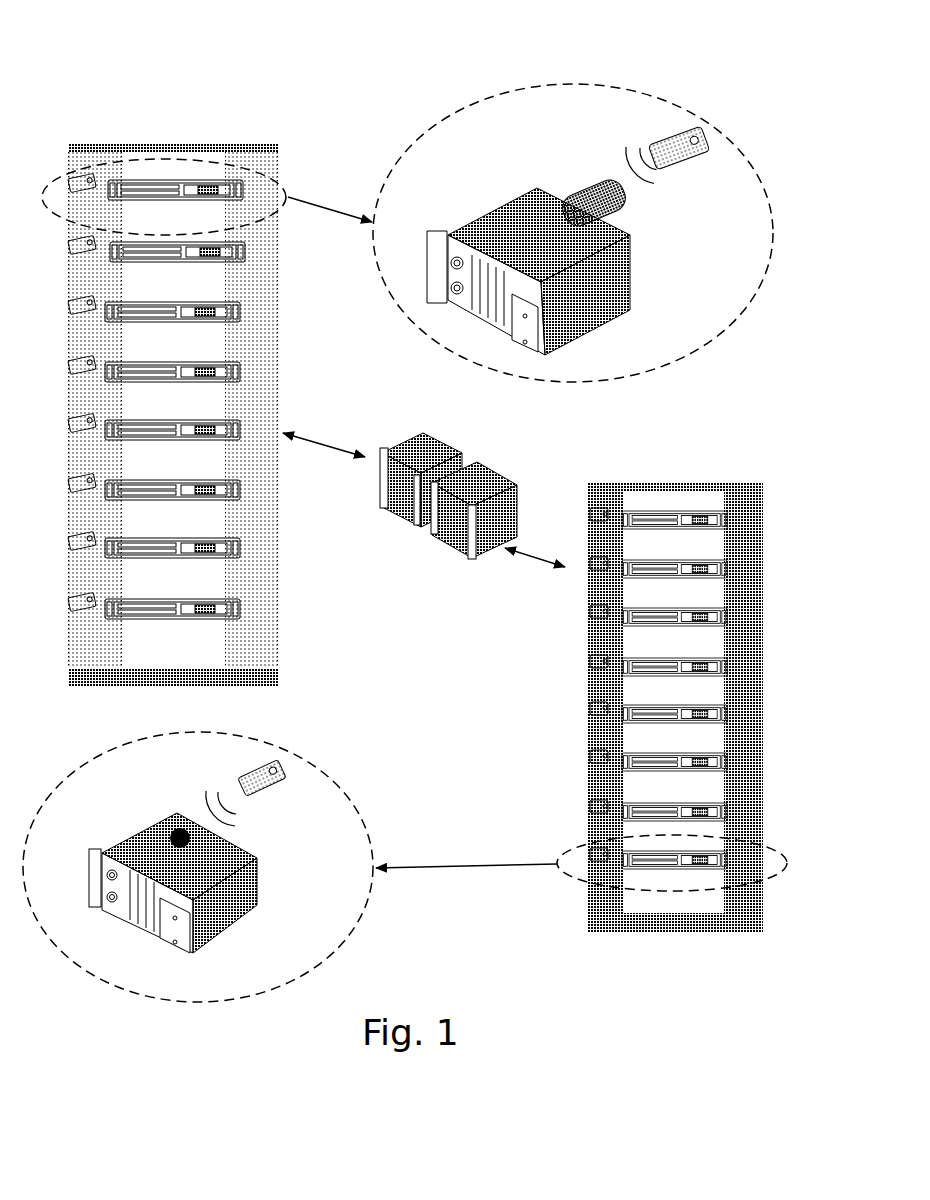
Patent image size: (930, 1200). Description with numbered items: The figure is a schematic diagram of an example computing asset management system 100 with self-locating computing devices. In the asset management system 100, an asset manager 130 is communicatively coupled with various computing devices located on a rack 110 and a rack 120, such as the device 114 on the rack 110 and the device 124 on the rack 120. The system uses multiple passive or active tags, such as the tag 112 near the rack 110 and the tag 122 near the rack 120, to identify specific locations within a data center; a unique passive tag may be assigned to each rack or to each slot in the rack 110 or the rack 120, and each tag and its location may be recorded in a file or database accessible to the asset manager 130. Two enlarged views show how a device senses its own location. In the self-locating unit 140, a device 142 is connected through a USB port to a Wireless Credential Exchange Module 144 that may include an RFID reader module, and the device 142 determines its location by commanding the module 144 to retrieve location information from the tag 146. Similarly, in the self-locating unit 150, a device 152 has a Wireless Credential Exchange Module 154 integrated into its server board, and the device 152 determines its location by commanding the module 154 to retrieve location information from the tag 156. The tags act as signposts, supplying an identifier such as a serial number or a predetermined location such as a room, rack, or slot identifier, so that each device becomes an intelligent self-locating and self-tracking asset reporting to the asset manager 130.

The computing asset management system 100 is at (275, 48).
The rack 110 is at (70, 398).
The tag 112 is at (76, 603).
The device 114 is at (242, 607).
The rack 120 is at (764, 548).
The tag 122 is at (596, 664).
The device 124 is at (728, 673).
The asset manager 130 is at (437, 528).
The self-locating unit 140 is at (484, 103).
The device 142 is at (624, 297).
The Wireless Credential Exchange Module 144 is at (618, 204).
The tag 146 is at (655, 143).
The self-locating unit 150 is at (312, 771).
The device 152 is at (222, 917).
The Wireless Credential Exchange Module 154 is at (165, 839).
The tag 156 is at (243, 784).